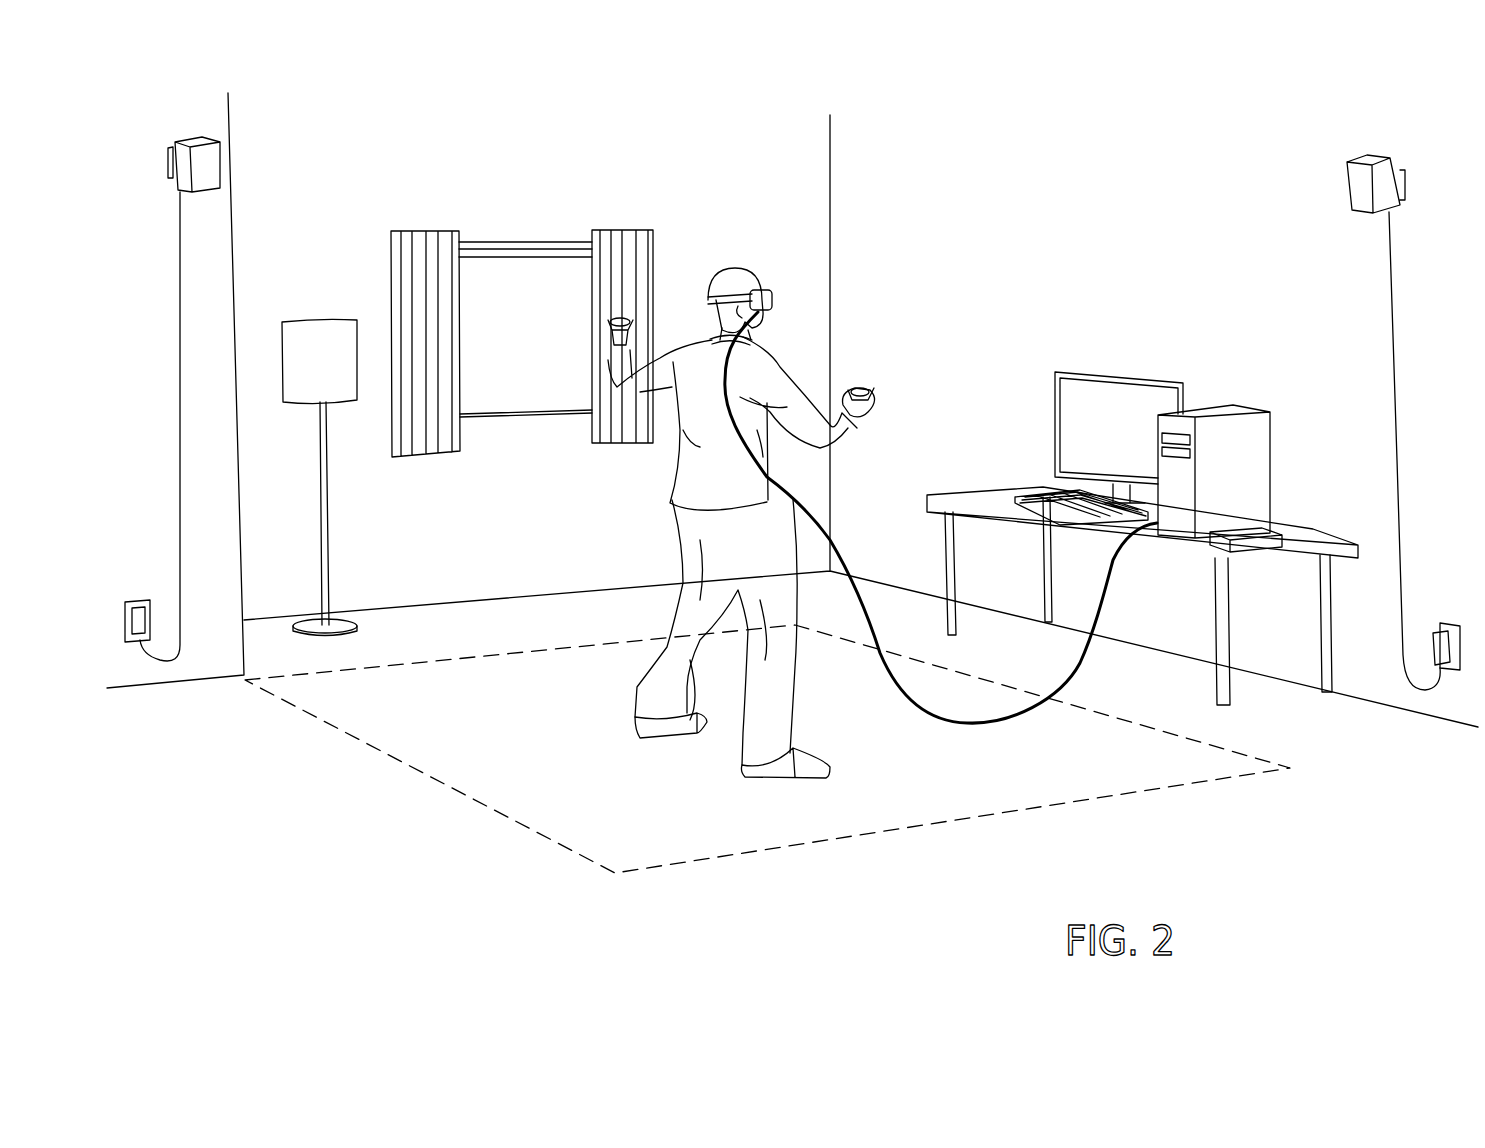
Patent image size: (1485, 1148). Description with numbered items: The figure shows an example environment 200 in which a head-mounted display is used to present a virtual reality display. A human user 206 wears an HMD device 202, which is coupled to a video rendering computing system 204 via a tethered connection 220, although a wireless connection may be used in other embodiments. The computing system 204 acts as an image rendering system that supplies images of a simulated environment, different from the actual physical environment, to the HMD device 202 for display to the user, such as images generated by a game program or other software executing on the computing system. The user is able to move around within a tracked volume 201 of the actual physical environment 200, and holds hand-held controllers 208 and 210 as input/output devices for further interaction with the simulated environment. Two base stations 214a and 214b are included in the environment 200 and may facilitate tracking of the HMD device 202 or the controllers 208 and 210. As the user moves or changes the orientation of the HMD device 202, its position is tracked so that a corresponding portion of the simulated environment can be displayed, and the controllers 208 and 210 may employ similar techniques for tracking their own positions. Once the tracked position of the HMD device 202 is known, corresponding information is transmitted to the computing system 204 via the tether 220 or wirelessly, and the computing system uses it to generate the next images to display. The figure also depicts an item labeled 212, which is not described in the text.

The environment 200 is at (1198, 98).
The tracked volume 201 is at (352, 712).
The HMD device 202 is at (764, 292).
The video rendering computing system 204 is at (1208, 410).
The human user 206 is at (622, 402).
The hand-held controller 208 is at (620, 318).
The hand-held controller 210 is at (870, 386).
The tracking device 212 is at (1250, 530).
The base station 214a is at (212, 158).
The base station 214b is at (1358, 185).
The tethered connection 220 is at (962, 726).